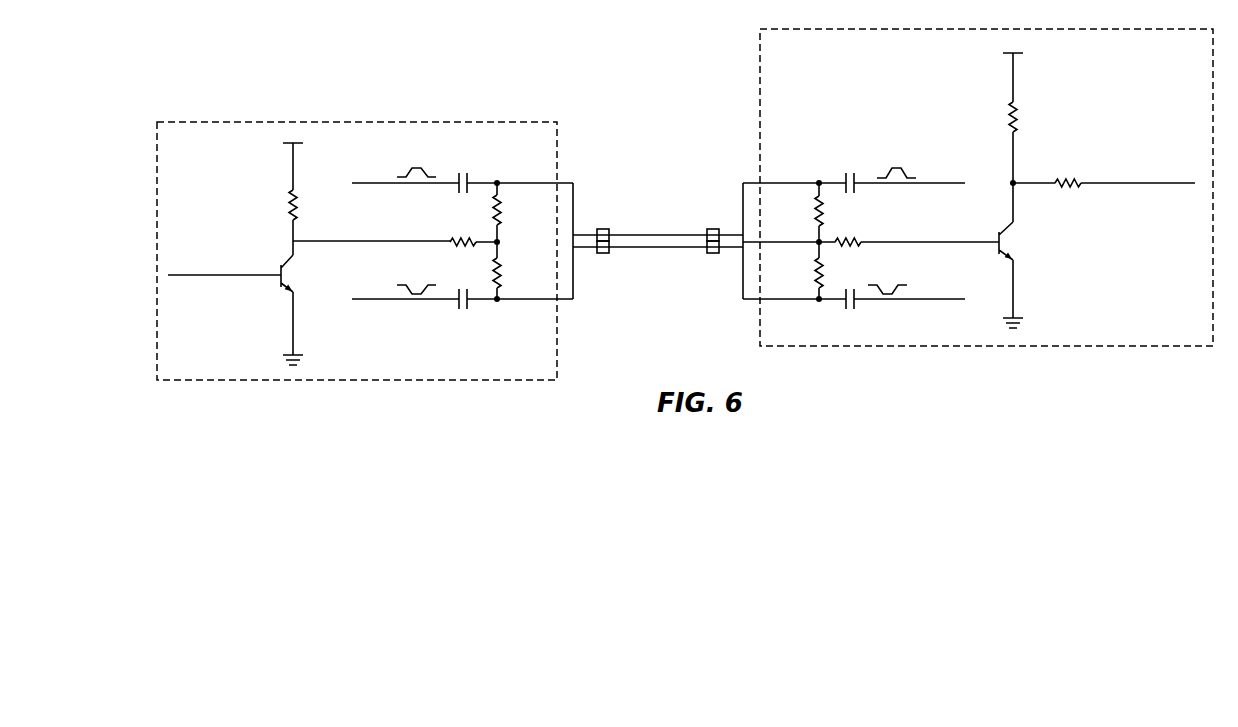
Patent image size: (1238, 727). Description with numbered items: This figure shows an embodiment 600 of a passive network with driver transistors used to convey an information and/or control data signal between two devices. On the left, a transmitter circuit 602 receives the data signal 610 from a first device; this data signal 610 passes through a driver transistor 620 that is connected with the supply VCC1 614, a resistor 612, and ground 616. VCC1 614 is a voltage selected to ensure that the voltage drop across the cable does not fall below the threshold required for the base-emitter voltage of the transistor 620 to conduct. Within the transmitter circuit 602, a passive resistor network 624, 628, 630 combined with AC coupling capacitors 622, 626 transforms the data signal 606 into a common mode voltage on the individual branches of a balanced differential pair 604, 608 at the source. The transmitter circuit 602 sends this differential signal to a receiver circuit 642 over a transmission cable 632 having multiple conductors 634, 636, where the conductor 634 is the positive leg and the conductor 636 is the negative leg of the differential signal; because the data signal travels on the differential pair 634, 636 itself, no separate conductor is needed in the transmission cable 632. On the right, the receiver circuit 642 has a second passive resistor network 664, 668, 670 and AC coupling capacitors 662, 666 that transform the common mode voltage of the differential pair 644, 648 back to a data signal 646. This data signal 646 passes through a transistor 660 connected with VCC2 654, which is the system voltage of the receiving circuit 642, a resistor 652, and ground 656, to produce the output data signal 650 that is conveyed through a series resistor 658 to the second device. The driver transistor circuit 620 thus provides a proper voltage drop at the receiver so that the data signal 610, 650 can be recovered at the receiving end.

The embodiment 600 is at (441, 27).
The transmitter circuit 602 is at (360, 121).
The branch of balanced differential pair 604 is at (416, 186).
The data signal 606 is at (395, 241).
The branch of balanced differential pair 608 is at (416, 302).
The data signal 610 is at (225, 274).
The resistor 612 is at (280, 212).
The VCC1 614 is at (278, 154).
The ground 616 is at (280, 365).
The driver transistor 620 is at (280, 308).
The AC coupling capacitor 622 is at (484, 168).
The resistor 624 is at (484, 227).
The AC coupling capacitor 626 is at (484, 332).
The resistor 628 is at (545, 222).
The resistor 630 is at (545, 279).
The transmission cable 632 is at (658, 252).
The conductor 634 is at (643, 233).
The conductor 636 is at (645, 249).
The receiver circuit 642 is at (924, 30).
The branch of differential pair 644 is at (897, 188).
The data signal 646 is at (922, 242).
The branch of differential pair 648 is at (888, 300).
The data signal 650 is at (1136, 183).
The resistor 652 is at (1060, 123).
The VCC2 654 is at (1065, 62).
The ground 656 is at (1065, 329).
The output resistor 658 is at (1086, 173).
The transistor 660 is at (1057, 251).
The AC coupling capacitor 662 is at (873, 168).
The resistor 664 is at (873, 226).
The AC coupling capacitor 666 is at (873, 329).
The resistor 668 is at (812, 219).
The resistor 670 is at (812, 278).